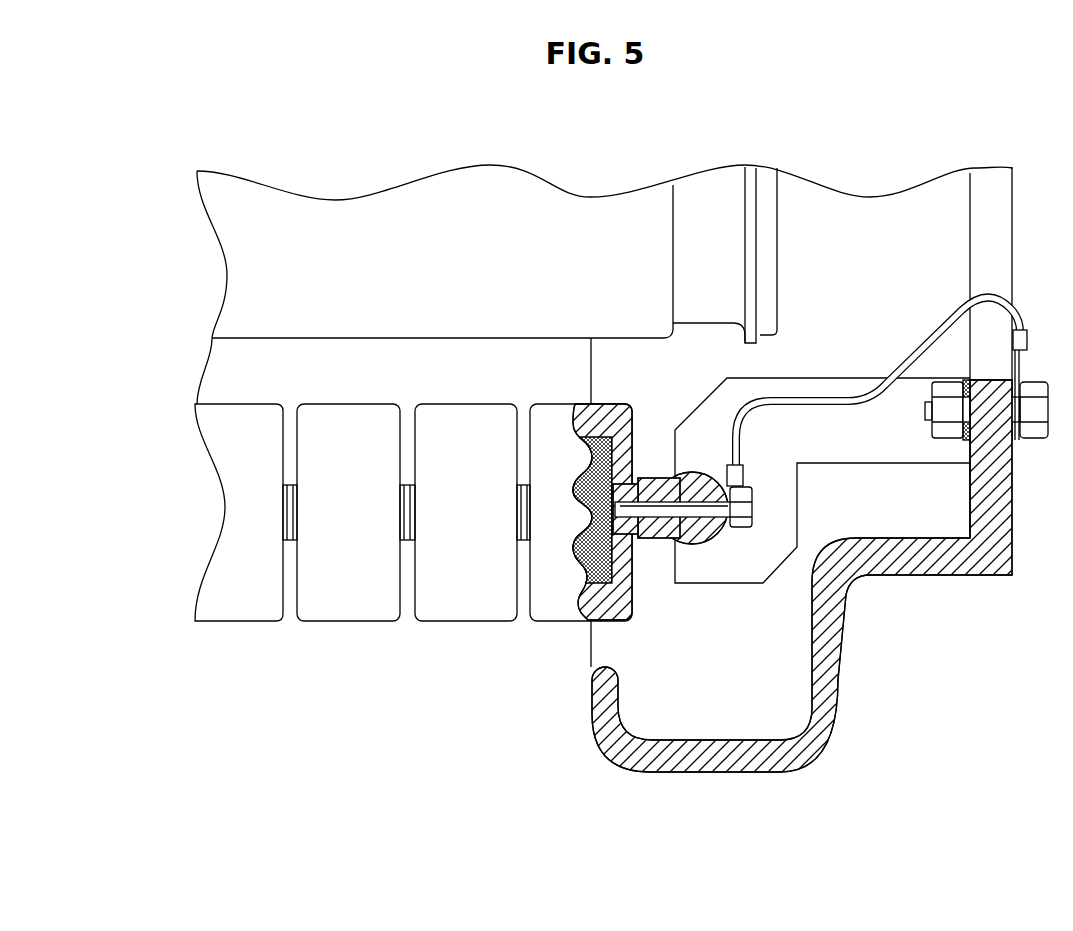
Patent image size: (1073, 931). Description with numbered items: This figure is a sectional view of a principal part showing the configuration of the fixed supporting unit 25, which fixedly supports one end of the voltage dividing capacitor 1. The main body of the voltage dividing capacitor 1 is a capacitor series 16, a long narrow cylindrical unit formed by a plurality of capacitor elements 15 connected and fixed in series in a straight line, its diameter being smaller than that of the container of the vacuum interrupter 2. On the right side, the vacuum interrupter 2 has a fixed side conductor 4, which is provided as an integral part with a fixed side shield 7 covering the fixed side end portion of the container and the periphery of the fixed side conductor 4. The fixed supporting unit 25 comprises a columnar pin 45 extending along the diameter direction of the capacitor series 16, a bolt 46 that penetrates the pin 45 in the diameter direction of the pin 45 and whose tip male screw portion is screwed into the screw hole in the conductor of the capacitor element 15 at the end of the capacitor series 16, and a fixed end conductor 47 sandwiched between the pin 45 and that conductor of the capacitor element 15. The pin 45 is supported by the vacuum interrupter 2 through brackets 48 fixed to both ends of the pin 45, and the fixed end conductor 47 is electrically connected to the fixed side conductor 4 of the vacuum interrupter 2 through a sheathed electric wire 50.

The voltage dividing capacitor 1 is at (580, 467).
The capacitor series 16 is at (234, 684).
The vacuum interrupter 2 is at (788, 230).
The fixed side conductor 4 is at (718, 207).
The fixed side shield 7 is at (693, 766).
The capacitor elements 15 is at (372, 588).
The fixed supporting unit 25 is at (661, 430).
The pin 45 is at (695, 543).
The bolt 46 is at (742, 507).
The fixed end conductor 47 is at (648, 538).
The brackets 48 is at (760, 565).
The sheathed electric wire 50 is at (830, 398).